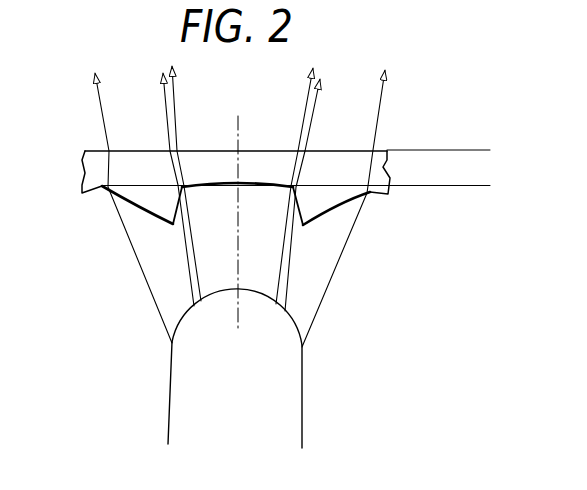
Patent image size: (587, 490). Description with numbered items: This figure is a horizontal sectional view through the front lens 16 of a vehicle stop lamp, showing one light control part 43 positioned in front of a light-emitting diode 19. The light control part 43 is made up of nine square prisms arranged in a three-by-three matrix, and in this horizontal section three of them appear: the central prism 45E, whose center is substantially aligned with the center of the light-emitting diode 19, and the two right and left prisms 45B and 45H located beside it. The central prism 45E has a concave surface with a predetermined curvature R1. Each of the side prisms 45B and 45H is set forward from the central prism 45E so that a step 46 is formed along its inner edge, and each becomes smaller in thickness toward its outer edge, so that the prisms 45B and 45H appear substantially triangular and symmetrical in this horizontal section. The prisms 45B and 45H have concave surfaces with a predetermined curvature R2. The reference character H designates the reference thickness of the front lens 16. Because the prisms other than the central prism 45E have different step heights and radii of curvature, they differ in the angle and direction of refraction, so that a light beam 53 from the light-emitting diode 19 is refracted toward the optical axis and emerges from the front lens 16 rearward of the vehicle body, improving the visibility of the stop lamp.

The front lens 16 is at (93, 147).
The light-emitting diode 19 is at (292, 402).
The light control part 43 is at (168, 265).
The prism 45B is at (119, 198).
The central prism 45E is at (217, 190).
The prism 45H is at (355, 204).
The step 46 is at (186, 196).
The light beam 53 is at (378, 117).
The curvature of central prism concave surface R1 is at (267, 196).
The curvature of side prism concave surfaces R2 is at (143, 206).
The reference thickness of front lens H is at (483, 127).